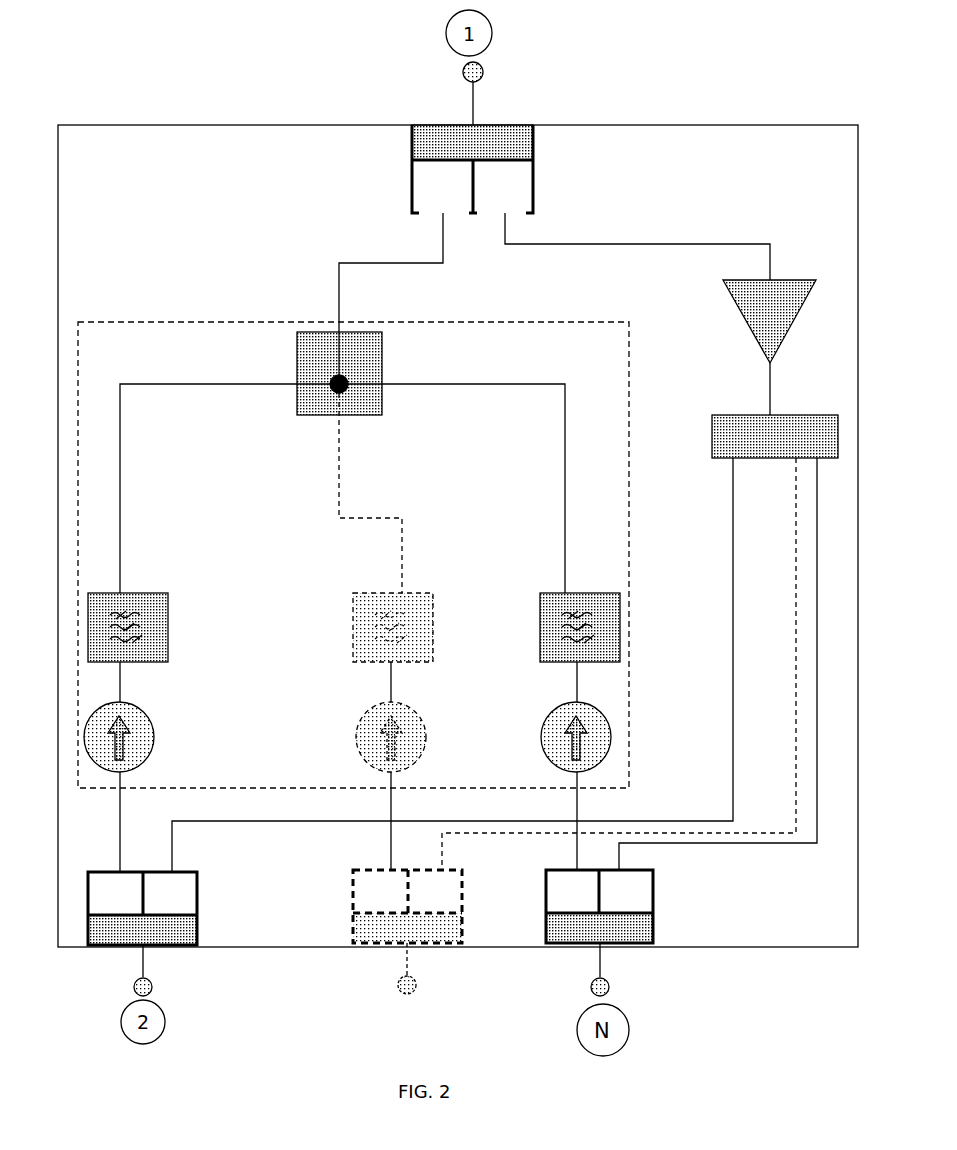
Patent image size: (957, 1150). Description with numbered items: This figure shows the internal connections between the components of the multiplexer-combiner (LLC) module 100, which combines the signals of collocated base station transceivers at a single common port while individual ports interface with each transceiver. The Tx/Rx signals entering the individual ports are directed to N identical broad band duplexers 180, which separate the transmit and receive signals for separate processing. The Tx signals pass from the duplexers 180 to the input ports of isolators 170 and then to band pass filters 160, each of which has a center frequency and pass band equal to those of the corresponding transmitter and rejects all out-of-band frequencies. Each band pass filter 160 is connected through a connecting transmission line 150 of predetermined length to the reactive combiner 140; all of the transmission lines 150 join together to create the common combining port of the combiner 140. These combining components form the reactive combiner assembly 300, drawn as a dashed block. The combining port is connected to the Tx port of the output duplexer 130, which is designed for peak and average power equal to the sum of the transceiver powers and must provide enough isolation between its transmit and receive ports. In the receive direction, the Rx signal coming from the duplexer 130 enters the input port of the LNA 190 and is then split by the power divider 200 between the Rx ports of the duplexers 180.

The multiplexer-combiner module 100 is at (337, 125).
The output duplexer 130 is at (412, 187).
The reactive combiner 140 is at (297, 345).
The connecting transmission line 150 is at (565, 520).
The band pass filters 160 is at (555, 593).
The isolators 170 is at (555, 708).
The broad band duplexers 180 is at (560, 870).
The LNA 190 is at (762, 343).
The power divider 200 is at (742, 415).
The reactive combiner assembly 300 is at (195, 322).